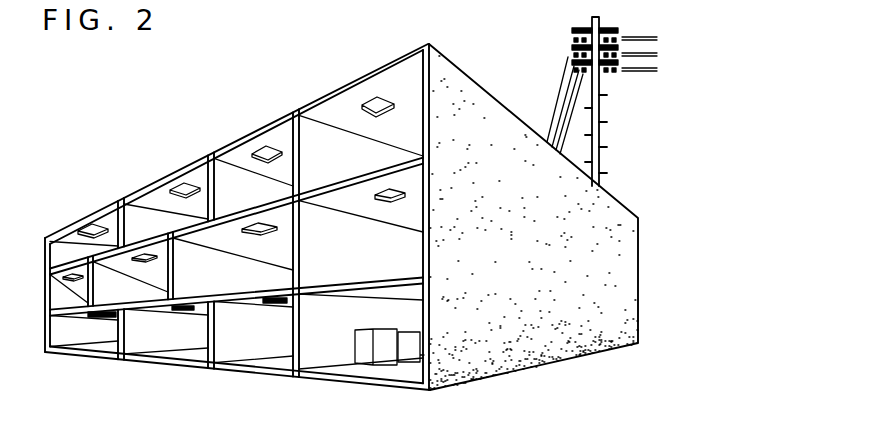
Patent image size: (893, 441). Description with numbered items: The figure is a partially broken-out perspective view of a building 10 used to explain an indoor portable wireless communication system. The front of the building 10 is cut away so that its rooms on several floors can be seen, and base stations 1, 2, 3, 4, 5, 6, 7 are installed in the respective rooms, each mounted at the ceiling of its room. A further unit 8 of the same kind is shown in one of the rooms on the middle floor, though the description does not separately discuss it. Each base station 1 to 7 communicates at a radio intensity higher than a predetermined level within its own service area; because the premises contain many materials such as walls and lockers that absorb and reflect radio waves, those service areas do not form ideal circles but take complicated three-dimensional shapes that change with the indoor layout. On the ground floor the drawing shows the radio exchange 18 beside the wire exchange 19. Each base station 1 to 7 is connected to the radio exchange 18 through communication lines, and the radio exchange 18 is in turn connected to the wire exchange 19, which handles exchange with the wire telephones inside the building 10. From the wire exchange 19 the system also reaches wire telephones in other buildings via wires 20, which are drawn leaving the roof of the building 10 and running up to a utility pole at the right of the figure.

The base station 1 is at (387, 115).
The base station 2 is at (262, 147).
The base station 3 is at (182, 186).
The base station 4 is at (90, 226).
The base station 5 is at (390, 203).
The base station 6 is at (255, 237).
The base station 7 is at (138, 263).
The radio base station unit 8 is at (72, 281).
The building 10 is at (403, 56).
The radio exchange 18 is at (409, 363).
The wire exchange 19 is at (366, 363).
The wires 20 is at (578, 116).